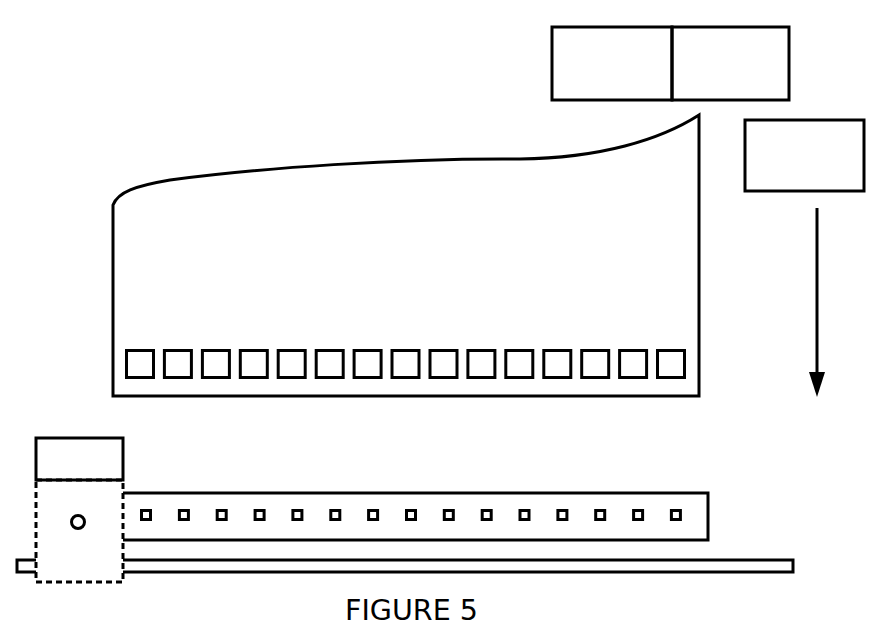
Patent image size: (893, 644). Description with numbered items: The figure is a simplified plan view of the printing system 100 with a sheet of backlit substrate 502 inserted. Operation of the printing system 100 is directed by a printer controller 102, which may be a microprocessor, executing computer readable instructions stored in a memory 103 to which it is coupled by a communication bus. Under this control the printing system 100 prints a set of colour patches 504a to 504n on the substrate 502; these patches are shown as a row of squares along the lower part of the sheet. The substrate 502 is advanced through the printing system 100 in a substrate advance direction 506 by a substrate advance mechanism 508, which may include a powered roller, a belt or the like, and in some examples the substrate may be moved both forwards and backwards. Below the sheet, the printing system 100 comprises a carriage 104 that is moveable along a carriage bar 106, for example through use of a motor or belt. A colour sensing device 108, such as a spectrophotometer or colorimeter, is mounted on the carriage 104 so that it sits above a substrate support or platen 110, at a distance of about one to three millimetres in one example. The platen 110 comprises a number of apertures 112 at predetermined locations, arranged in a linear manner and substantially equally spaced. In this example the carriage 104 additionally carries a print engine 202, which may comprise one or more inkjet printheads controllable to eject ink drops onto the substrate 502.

The printing system 100 is at (90, 118).
The printer controller 102 is at (552, 62).
The memory 103 is at (789, 62).
The carriage 104 is at (87, 582).
The carriage bar 106 is at (741, 560).
The colour sensing device 108 is at (74, 516).
The platen 110 is at (686, 493).
The apertures 112 is at (334, 510).
The print engine 202 is at (123, 466).
The backlit substrate 502 is at (113, 212).
The colour patch 504a is at (141, 380).
The colour patch 504n is at (669, 380).
The substrate advance direction 506 is at (817, 281).
The substrate advance mechanism 508 is at (781, 191).